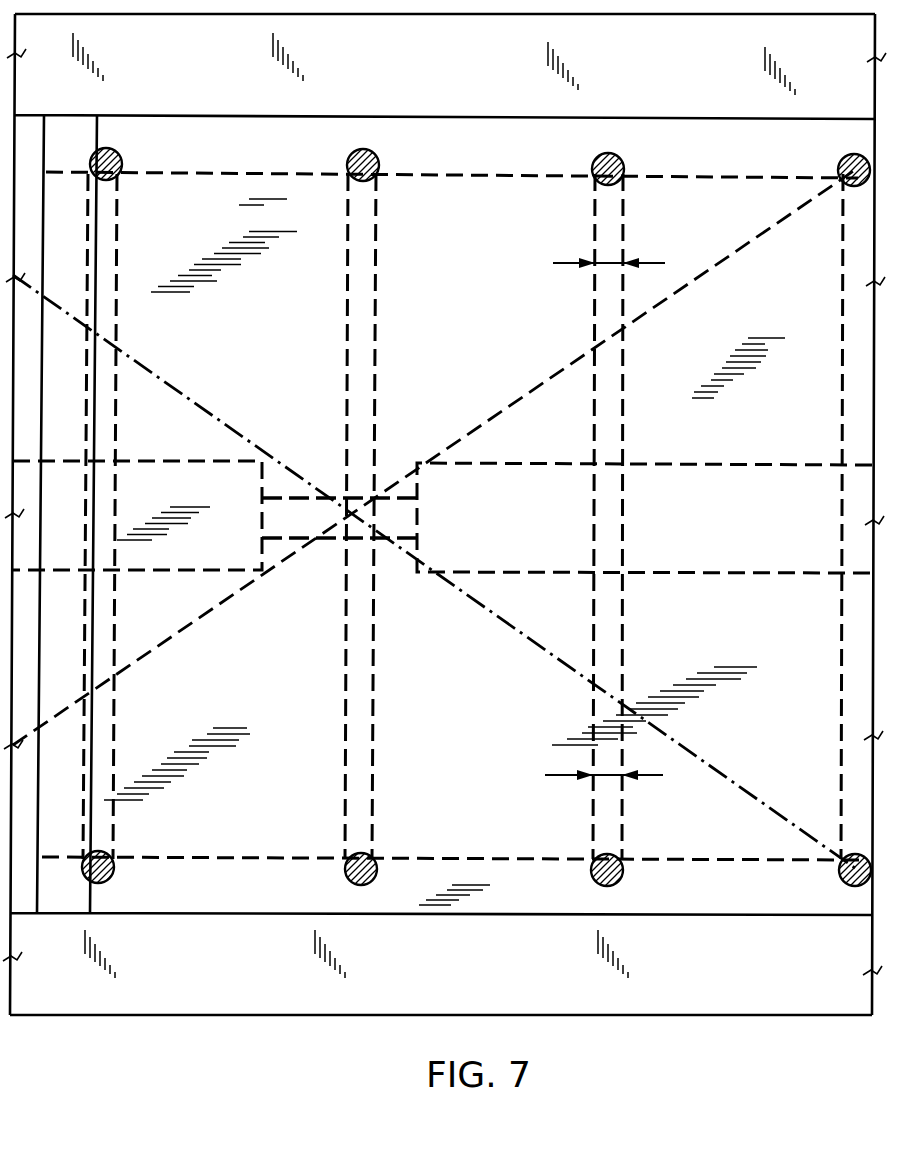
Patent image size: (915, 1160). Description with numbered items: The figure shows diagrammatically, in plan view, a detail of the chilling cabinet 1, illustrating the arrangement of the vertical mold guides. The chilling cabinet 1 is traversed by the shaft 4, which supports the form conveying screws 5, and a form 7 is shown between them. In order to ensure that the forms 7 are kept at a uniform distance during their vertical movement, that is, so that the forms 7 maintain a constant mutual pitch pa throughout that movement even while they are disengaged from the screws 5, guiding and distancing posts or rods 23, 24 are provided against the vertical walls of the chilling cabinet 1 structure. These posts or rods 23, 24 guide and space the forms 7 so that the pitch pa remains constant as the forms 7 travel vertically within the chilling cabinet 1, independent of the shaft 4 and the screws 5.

The chilling cabinet 1 is at (180, 960).
The shaft 4 is at (312, 518).
The form conveying screws 5 is at (686, 522).
The form 7 is at (820, 253).
The guiding and distancing post 23 is at (456, 517).
The guiding and distancing post 24 is at (378, 173).
The mutual pitch pa is at (612, 263).